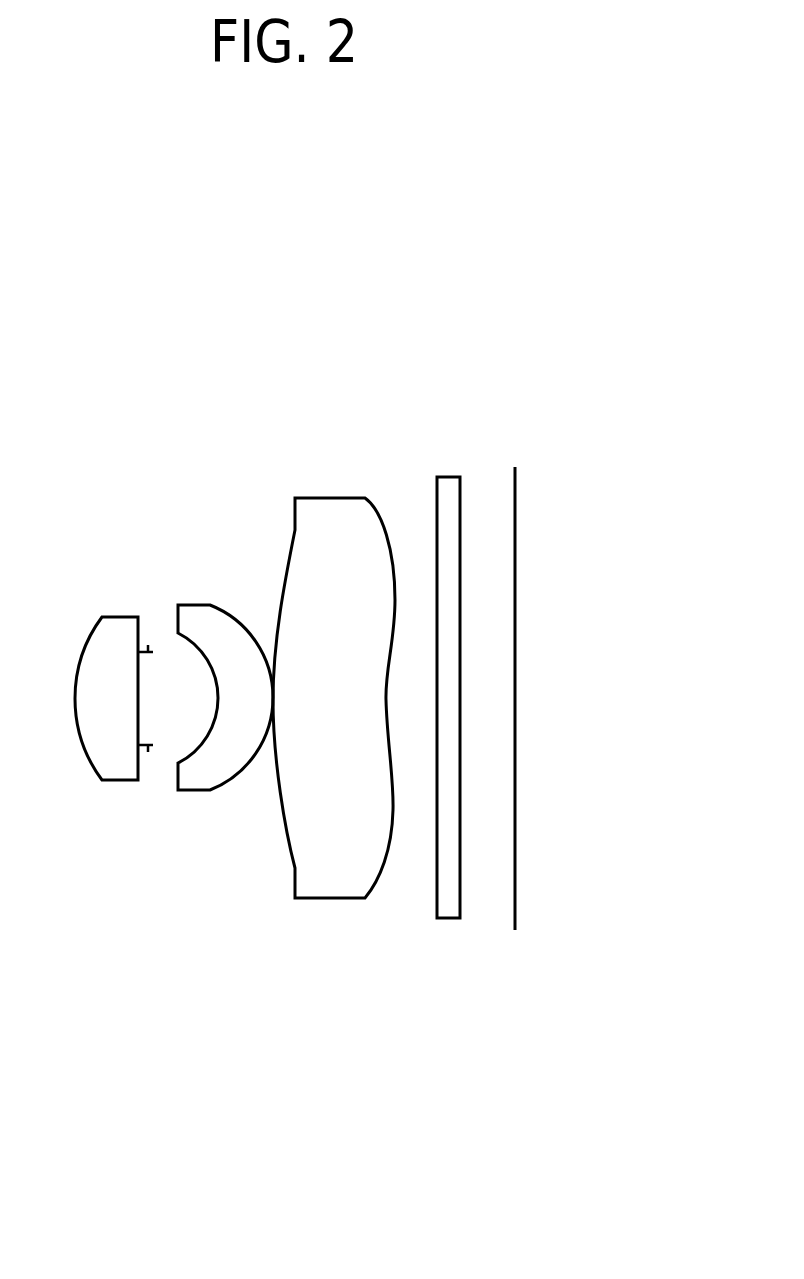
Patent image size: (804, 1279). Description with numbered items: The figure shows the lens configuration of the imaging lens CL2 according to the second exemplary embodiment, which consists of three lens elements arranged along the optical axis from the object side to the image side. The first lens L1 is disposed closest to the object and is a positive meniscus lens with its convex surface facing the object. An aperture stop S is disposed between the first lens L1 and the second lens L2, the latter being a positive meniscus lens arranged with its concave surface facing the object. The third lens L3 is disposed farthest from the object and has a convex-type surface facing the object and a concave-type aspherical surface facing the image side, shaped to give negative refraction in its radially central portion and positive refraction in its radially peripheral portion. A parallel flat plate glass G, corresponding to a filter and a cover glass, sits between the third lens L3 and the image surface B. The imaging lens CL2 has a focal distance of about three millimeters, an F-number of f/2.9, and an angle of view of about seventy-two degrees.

The imaging lens CL2 is at (582, 372).
The first lens L1 is at (117, 780).
The second lens L2 is at (198, 790).
The third lens L3 is at (327, 898).
The aperture stop S is at (145, 655).
The parallel flat plate glass G is at (443, 477).
The image surface B is at (511, 480).